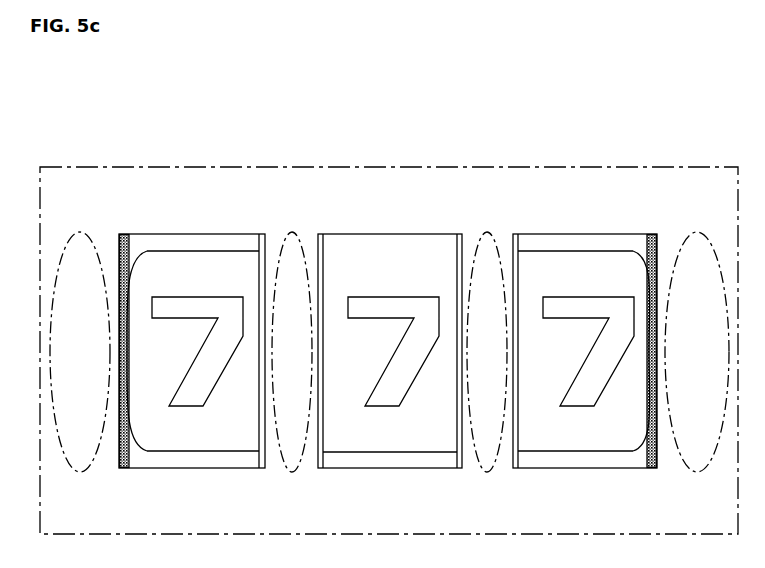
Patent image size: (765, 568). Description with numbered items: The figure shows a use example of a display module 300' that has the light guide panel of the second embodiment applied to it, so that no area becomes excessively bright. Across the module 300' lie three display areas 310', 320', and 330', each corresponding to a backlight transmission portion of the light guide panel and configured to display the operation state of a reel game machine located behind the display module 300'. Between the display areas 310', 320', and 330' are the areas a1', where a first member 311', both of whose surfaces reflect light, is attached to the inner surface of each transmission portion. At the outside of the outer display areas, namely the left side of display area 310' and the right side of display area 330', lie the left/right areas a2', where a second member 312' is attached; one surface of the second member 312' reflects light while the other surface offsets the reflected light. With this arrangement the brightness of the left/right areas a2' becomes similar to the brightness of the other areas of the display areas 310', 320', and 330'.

The display module 300' is at (389, 306).
The display area 310' is at (192, 322).
The display area 320' is at (390, 322).
The display area 330' is at (585, 321).
The first member 311' is at (388, 384).
The second member 312' is at (391, 385).
The area between the display areas a1' is at (389, 275).
The left/right area a2' is at (389, 285).